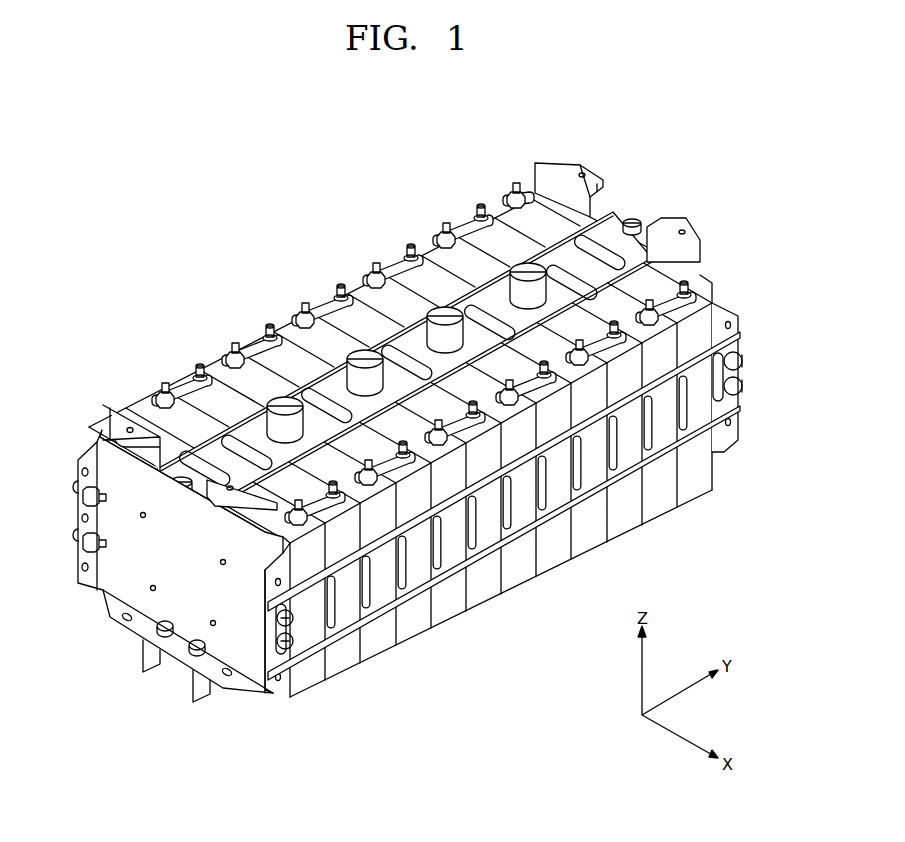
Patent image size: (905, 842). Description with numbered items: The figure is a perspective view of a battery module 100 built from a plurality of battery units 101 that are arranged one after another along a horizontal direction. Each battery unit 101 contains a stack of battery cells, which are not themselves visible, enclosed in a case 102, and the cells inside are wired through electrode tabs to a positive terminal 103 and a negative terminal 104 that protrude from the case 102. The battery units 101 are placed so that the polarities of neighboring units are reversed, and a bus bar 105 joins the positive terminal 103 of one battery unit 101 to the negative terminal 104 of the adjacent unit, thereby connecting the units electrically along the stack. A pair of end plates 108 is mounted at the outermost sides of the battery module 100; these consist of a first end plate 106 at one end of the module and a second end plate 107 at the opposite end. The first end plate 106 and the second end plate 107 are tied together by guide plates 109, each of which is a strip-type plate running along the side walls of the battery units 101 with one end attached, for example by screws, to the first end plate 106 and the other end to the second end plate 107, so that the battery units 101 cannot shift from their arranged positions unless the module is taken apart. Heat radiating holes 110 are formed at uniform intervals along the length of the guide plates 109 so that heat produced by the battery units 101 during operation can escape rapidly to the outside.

The battery module 100 is at (246, 236).
The battery unit 101 is at (527, 576).
The case 102 is at (438, 243).
The positive terminal 103 is at (377, 274).
The negative terminal 104 is at (412, 252).
The bus bar 105 is at (248, 350).
The first end plate 106 is at (116, 410).
The second end plate 107 is at (558, 165).
The end plates 108 is at (82, 592).
The guide plate 109 is at (418, 568).
The heat radiating hole 110 is at (473, 540).